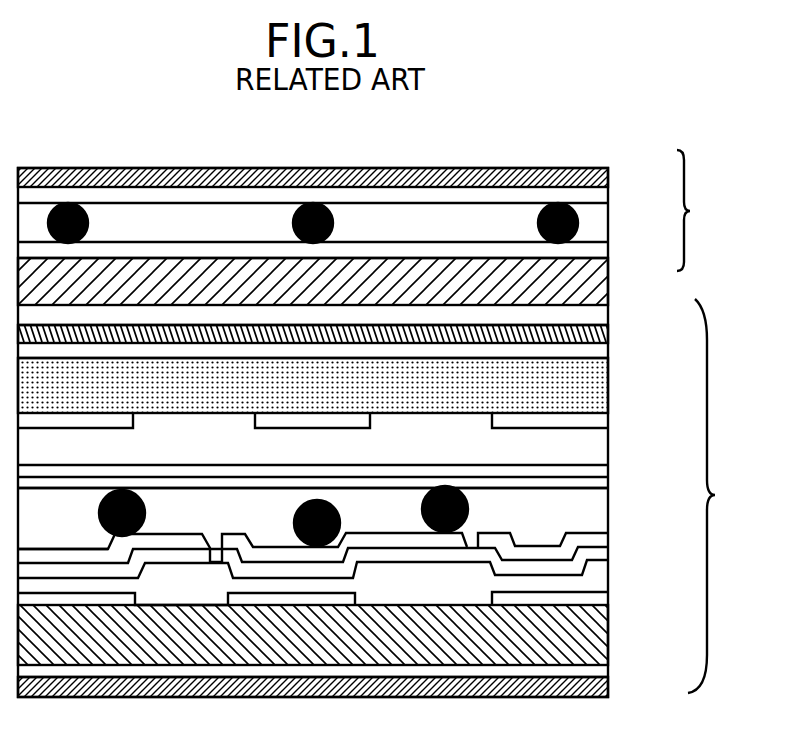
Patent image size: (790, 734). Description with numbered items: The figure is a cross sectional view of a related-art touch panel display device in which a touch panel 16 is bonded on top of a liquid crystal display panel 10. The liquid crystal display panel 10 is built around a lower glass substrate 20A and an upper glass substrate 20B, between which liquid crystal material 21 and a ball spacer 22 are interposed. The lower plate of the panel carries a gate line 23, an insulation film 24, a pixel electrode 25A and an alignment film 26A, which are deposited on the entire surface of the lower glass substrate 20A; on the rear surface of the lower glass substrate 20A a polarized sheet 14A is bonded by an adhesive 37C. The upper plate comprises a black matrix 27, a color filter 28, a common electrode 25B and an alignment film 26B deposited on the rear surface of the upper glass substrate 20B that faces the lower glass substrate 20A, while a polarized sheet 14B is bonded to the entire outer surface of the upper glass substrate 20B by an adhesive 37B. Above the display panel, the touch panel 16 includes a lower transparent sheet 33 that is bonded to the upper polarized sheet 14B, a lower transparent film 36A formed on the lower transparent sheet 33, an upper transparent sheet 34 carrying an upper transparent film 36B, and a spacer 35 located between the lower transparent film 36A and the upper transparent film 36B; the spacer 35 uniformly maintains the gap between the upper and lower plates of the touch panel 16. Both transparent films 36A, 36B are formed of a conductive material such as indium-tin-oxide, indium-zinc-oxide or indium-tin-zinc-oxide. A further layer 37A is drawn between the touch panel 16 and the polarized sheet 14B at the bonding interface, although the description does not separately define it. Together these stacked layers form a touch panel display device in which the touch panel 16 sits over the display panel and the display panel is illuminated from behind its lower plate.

The liquid crystal display panel 10 is at (718, 496).
The touch panel 16 is at (700, 210).
The upper transparent sheet 34 is at (608, 169).
The upper transparent film 36B is at (608, 196).
The spacer 35 is at (578, 226).
The lower transparent film 36A is at (608, 251).
The lower transparent sheet 33 is at (608, 281).
The alignment layer 37A is at (608, 312).
The polarized sheet 14B is at (608, 335).
The adhesive 37B is at (608, 351).
The upper glass substrate 20B is at (608, 385).
The black matrix 27 is at (608, 421).
The color filter 28 is at (608, 446).
The common electrode 25B is at (608, 470).
The alignment film 26B is at (608, 483).
The liquid crystal material 21 is at (608, 510).
The ball spacer 22 is at (468, 507).
The alignment film 26A is at (608, 536).
The pixel electrode 25A is at (608, 553).
The insulation film 24 is at (608, 568).
The gate line 23 is at (608, 598).
The lower glass substrate 20A is at (608, 636).
The adhesive 37C is at (608, 670).
The polarized sheet 14A is at (608, 690).